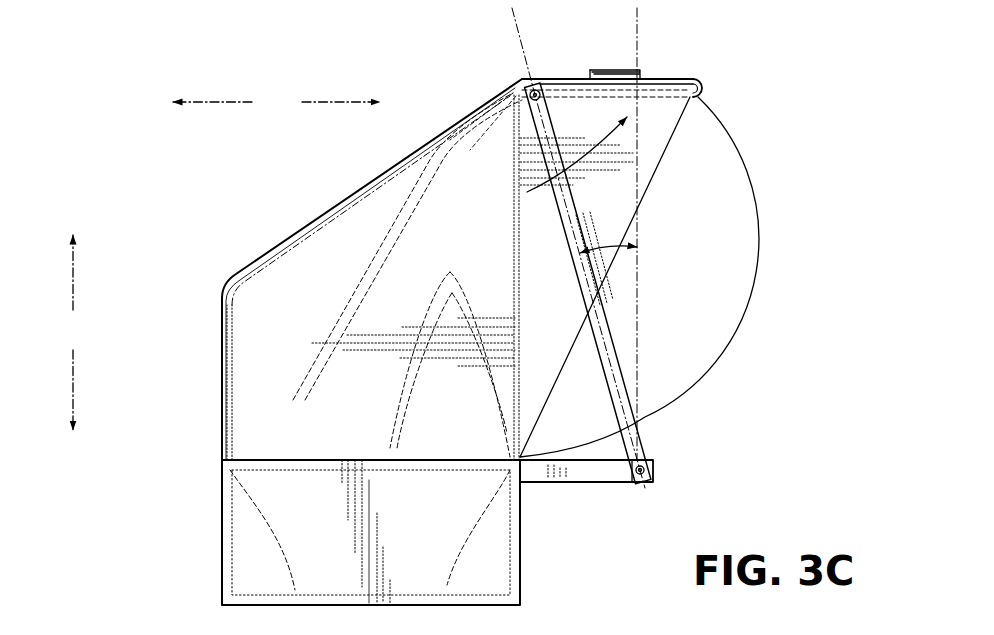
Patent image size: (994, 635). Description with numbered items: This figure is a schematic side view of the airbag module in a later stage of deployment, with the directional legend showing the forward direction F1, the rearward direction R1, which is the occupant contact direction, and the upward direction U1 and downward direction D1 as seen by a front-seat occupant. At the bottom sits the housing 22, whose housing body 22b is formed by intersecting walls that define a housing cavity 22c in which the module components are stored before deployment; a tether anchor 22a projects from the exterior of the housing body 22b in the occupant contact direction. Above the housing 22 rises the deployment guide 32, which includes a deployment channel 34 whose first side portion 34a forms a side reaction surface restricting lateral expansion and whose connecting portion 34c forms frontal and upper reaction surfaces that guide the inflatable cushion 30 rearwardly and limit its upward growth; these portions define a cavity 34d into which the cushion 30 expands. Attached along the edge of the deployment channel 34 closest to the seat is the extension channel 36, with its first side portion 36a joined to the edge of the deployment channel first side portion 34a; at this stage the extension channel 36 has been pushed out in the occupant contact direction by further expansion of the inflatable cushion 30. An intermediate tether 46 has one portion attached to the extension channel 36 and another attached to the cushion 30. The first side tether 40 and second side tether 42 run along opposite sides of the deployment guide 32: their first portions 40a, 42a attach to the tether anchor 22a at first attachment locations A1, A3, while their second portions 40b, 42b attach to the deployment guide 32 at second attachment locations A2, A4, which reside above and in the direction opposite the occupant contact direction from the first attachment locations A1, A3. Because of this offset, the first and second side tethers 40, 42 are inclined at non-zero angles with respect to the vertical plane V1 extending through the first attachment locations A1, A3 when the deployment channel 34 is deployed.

The housing 22 is at (215, 510).
The tether anchor 22a is at (547, 472).
The housing body 22b is at (220, 563).
The housing cavity 22c is at (488, 545).
The inflatable cushion 30 is at (713, 152).
The deployment guide 32 is at (267, 230).
The deployment channel 34 is at (235, 277).
The first side portion of deployment channel 34a is at (360, 227).
The connecting portion of deployment channel 34c is at (308, 230).
The cavity of deployment channel 34d is at (275, 397).
The extension channel 36 is at (561, 73).
The first side portion of extension channel 36a is at (622, 197).
The first side tether 40 is at (645, 248).
The second side tether 42 is at (616, 343).
The first portion of first side tether 40a is at (694, 440).
The first portion of second side tether 42a is at (643, 447).
The second portion of first side tether 40b is at (483, 68).
The second portion of second side tether 42b is at (533, 80).
The intermediate tether 46 is at (665, 68).
The first attachment location of first side tether A1 is at (699, 488).
The first attachment location of second side tether A3 is at (655, 470).
The second attachment location of first side tether A2 is at (566, 55).
The second attachment location of second side tether A4 is at (543, 83).
The vertical plane V1 is at (641, 45).
The forward direction F1 is at (212, 90).
The rearward direction R1 is at (341, 90).
The upward direction U1 is at (56, 272).
The downward direction D1 is at (56, 390).